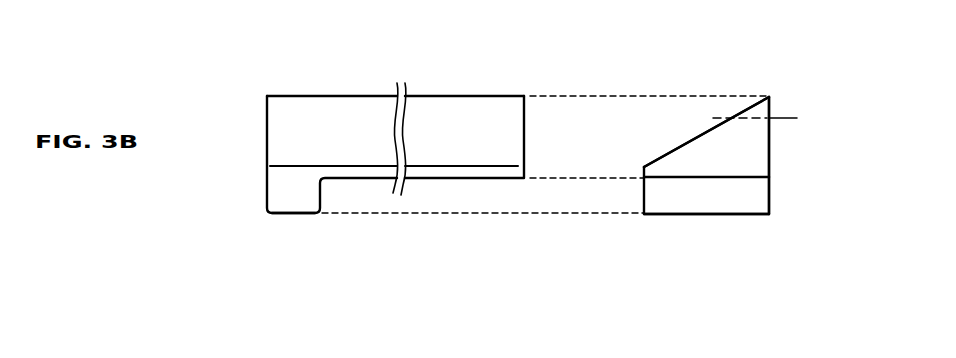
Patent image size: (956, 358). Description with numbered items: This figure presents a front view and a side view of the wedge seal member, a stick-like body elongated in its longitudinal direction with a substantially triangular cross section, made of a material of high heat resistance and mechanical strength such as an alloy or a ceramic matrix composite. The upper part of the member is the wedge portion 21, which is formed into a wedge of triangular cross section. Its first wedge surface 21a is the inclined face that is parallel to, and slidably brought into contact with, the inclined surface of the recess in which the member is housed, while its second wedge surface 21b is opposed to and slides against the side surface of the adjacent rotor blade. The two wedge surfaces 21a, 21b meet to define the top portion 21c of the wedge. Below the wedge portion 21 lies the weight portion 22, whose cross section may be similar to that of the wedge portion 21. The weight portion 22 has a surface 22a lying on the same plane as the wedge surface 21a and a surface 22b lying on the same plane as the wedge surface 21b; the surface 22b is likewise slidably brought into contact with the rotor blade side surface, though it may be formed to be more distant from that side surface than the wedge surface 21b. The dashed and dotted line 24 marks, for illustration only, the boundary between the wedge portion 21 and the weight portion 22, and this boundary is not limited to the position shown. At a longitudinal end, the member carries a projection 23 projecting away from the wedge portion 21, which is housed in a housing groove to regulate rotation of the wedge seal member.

The wedge portion 21 is at (770, 107).
The first wedge surface 21a is at (312, 133).
The second wedge surface 21b is at (770, 137).
The top portion 21c is at (352, 95).
The weight portion 22 is at (752, 160).
The surface of weight portion 22a is at (670, 152).
The surface of weight portion 22b is at (770, 192).
The projection 23 is at (292, 193).
The dashed and dotted line 24 is at (722, 117).